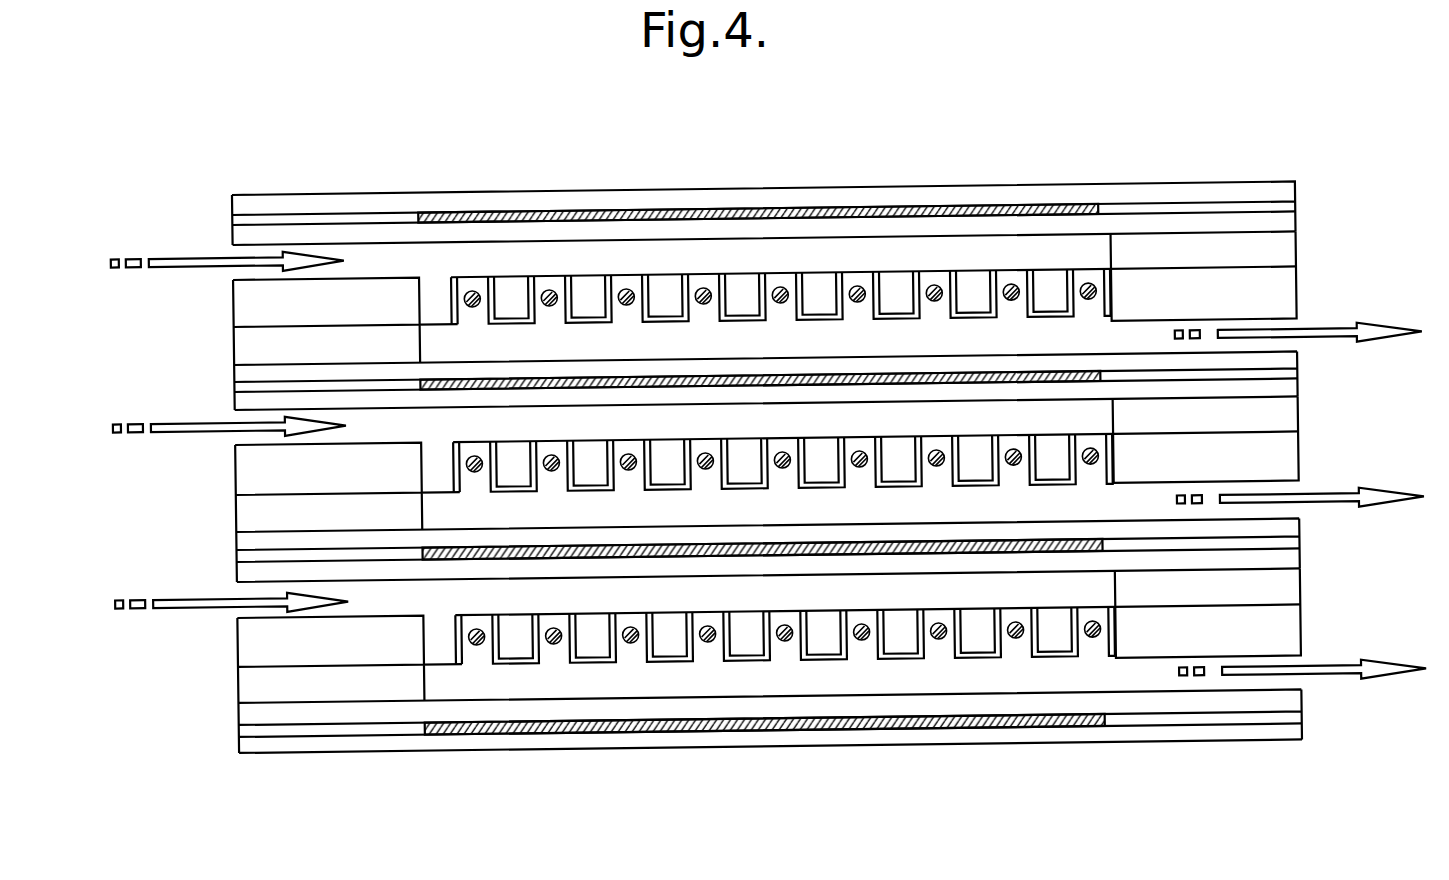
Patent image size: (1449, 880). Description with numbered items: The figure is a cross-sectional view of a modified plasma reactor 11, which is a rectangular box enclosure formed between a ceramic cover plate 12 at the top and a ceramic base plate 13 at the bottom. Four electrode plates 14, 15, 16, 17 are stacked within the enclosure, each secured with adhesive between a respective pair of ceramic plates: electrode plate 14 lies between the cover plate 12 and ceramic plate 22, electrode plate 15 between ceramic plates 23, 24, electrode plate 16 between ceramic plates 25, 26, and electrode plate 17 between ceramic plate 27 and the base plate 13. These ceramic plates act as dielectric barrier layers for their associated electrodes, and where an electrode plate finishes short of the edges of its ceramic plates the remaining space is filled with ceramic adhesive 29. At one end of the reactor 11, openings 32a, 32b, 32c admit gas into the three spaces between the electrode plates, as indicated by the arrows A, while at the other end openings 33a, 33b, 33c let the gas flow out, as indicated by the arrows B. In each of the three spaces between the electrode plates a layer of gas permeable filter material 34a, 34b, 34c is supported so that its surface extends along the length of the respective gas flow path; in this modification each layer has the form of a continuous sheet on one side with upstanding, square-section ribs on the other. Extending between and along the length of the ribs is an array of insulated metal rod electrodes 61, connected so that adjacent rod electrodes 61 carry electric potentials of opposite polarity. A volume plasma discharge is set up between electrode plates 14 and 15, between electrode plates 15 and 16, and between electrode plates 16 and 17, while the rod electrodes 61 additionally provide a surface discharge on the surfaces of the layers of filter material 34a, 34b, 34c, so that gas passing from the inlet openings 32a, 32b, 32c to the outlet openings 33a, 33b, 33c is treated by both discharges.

The reactor 11 is at (789, 153).
The ceramic cover plate 12 is at (918, 209).
The ceramic base plate 13 is at (773, 742).
The electrode plate 14 is at (1042, 218).
The electrode plate 15 is at (683, 389).
The electrode plate 16 is at (782, 557).
The electrode plate 17 is at (1033, 732).
The ceramic plate 22 is at (1280, 236).
The ceramic plate 23 is at (1285, 373).
The ceramic plate 24 is at (1288, 401).
The ceramic plate 25 is at (1284, 541).
The ceramic plate 26 is at (1280, 571).
The ceramic plate 27 is at (1284, 711).
The ceramic adhesive 29 is at (1191, 727).
The opening 32a is at (707, 268).
The opening 32b is at (235, 437).
The opening 32c is at (238, 612).
The opening 33a is at (623, 337).
The opening 33b is at (1289, 503).
The opening 33c is at (1297, 674).
The layer of filter material 34a is at (782, 282).
The layer of filter material 34b is at (774, 445).
The layer of filter material 34c is at (524, 634).
The insulated metal rod electrodes 61 is at (535, 326).